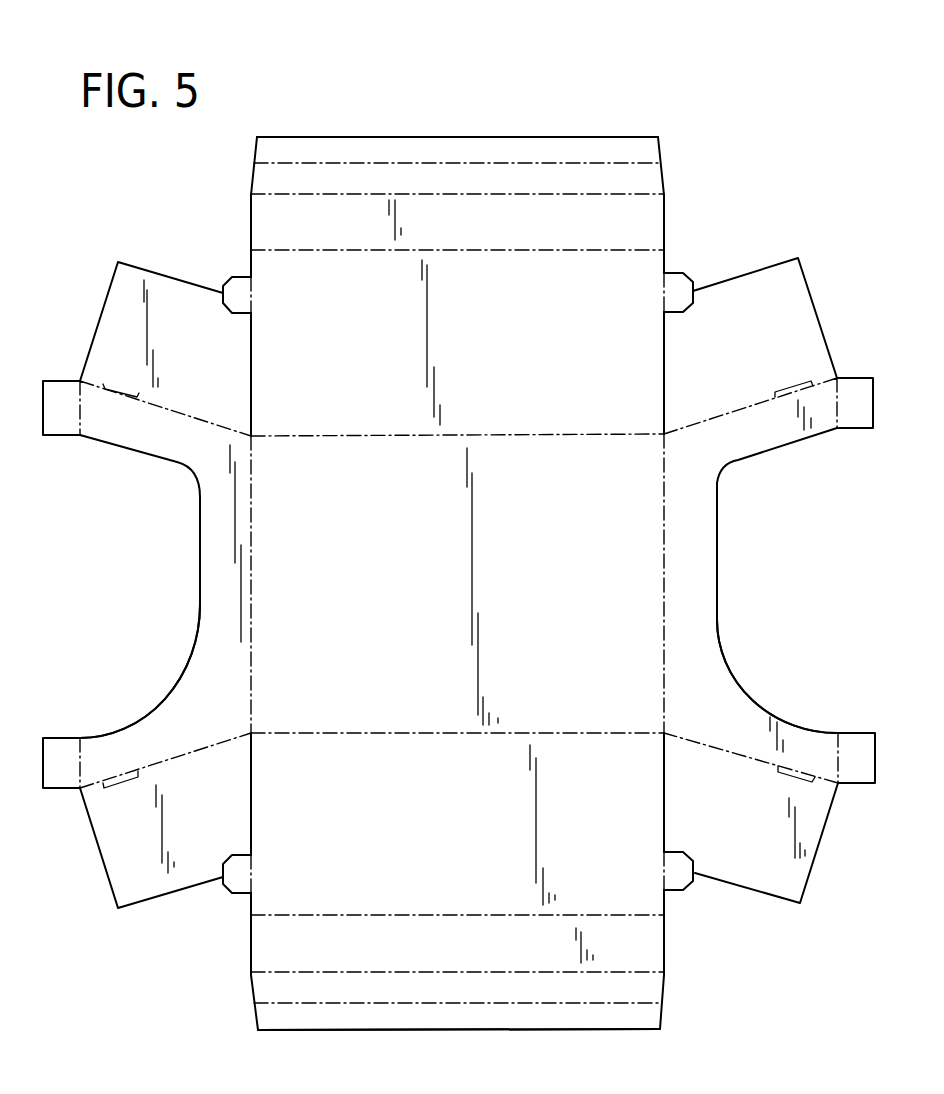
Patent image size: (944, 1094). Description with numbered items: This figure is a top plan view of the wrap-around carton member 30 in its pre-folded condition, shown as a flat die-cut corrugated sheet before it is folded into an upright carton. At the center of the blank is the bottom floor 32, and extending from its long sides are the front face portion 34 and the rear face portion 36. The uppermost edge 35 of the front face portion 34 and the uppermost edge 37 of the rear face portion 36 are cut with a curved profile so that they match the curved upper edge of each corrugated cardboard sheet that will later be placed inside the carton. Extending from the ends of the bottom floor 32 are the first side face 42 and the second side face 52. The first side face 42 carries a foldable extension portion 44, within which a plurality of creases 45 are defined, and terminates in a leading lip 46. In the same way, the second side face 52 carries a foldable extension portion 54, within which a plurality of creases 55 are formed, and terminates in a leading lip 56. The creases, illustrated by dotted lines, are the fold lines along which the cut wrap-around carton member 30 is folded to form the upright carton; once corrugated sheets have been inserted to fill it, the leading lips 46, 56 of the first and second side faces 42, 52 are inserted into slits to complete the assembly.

The wrap-around carton member 30 is at (738, 113).
The bottom floor 32 is at (618, 540).
The front face portion 34 is at (720, 698).
The uppermost edge of the front face portion 35 is at (717, 605).
The rear face portion 36 is at (208, 700).
The uppermost edge of the rear face portion 37 is at (200, 542).
The first side face 42 is at (618, 872).
The foldable extension portion 44 is at (650, 982).
The creases 45 is at (318, 913).
The leading lip 46 is at (552, 1032).
The second side face 52 is at (305, 285).
The foldable extension portion 54 is at (440, 177).
The creases 55 is at (547, 162).
The leading lip 56 is at (370, 137).